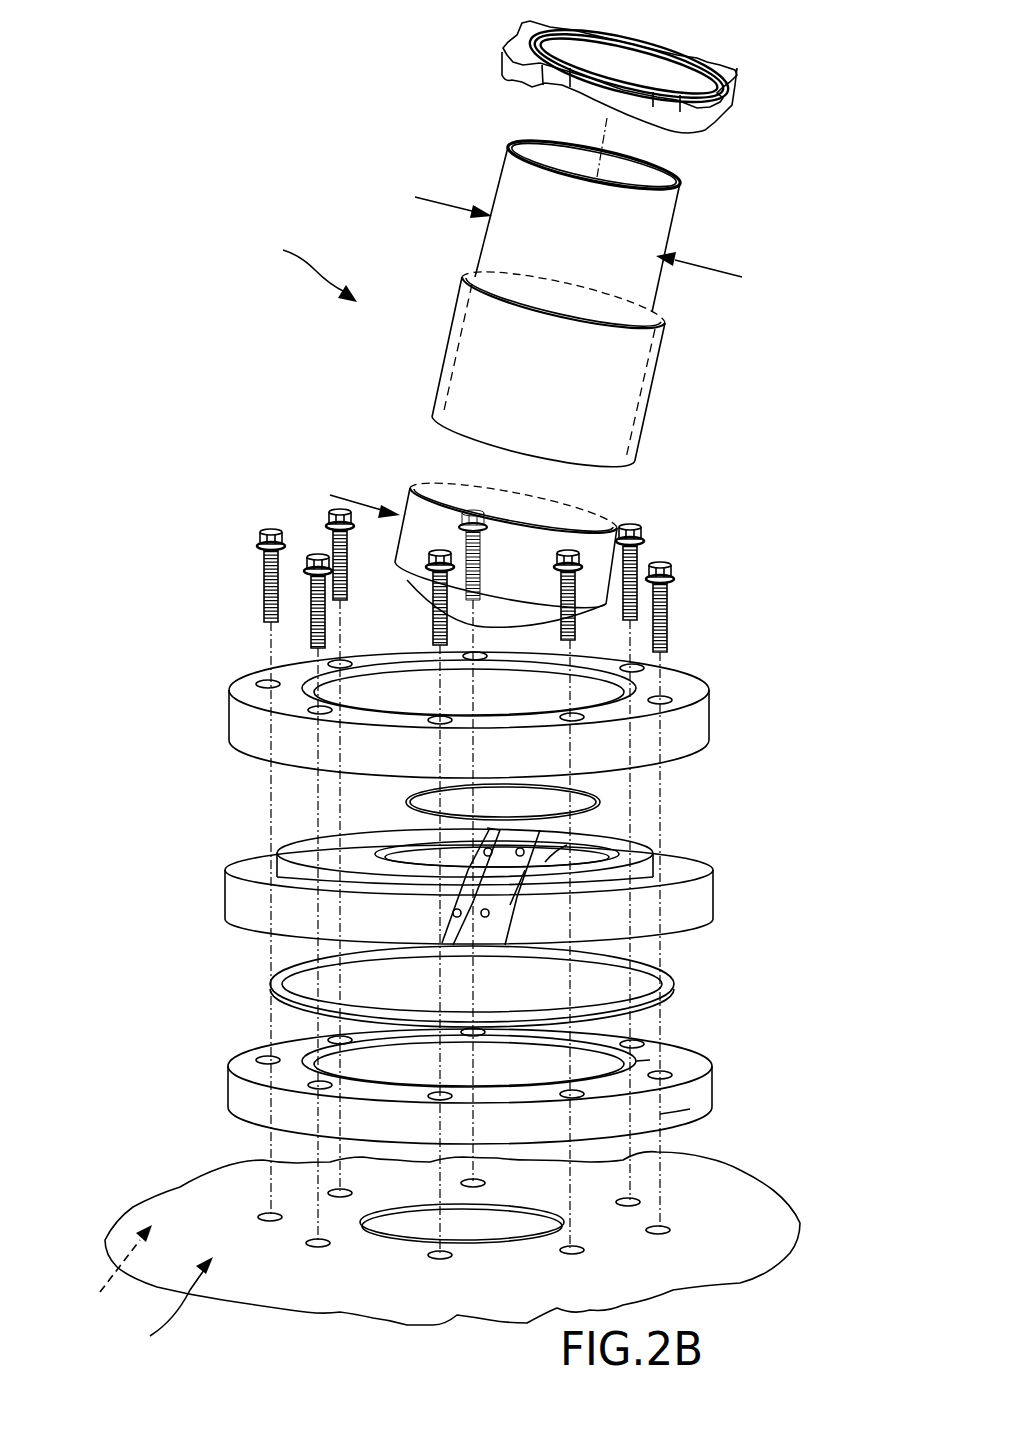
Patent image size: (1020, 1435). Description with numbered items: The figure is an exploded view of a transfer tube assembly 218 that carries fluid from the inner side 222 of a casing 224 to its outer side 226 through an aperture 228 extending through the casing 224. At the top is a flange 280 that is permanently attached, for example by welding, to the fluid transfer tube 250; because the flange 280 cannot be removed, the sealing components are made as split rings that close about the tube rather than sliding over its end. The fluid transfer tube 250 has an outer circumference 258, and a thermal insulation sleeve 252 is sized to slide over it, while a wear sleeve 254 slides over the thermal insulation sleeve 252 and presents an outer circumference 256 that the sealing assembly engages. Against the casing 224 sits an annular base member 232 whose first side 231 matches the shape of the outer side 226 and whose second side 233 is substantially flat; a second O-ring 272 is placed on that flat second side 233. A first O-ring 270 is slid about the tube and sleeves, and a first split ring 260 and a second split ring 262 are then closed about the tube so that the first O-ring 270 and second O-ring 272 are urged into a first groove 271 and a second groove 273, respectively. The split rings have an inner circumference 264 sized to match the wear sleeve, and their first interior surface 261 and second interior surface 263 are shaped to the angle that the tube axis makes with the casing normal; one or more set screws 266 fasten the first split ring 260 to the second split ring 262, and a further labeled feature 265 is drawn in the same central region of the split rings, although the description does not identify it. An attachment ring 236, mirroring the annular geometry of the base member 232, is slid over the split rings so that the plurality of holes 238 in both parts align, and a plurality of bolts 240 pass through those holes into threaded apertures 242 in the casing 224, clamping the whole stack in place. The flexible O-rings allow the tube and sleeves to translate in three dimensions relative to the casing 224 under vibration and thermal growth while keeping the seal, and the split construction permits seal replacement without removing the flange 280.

The transfer tube assembly 218 is at (298, 271).
The inner side 222 is at (100, 1292).
The casing 224 is at (435, 1247).
The outer side 226 is at (160, 1309).
The aperture 228 is at (385, 1237).
The first side 231 is at (670, 1115).
The base member 232 is at (504, 1079).
The second side 233 is at (687, 1062).
The attachment ring 236 is at (710, 704).
The holes 238 is at (252, 686).
The bolts 240 is at (260, 540).
The threaded apertures 242 is at (265, 1212).
The fluid transfer tube 250 is at (673, 220).
The thermal insulation sleeve 252 is at (650, 402).
The wear sleeve 254 is at (610, 552).
The outer circumference 256 is at (350, 498).
The outer circumference 258 is at (438, 201).
The first split ring 260 is at (468, 863).
The first interior surface 261 is at (393, 852).
The second split ring 262 is at (690, 868).
The second interior surface 263 is at (570, 840).
The inner circumference 264 is at (610, 850).
The sensor lead 265 is at (465, 856).
The set screws 266 is at (519, 848).
The first O-ring 270 is at (603, 801).
The first groove 271 is at (407, 857).
The second O-ring 272 is at (673, 985).
The second groove 273 is at (453, 940).
The flange 280 is at (713, 110).